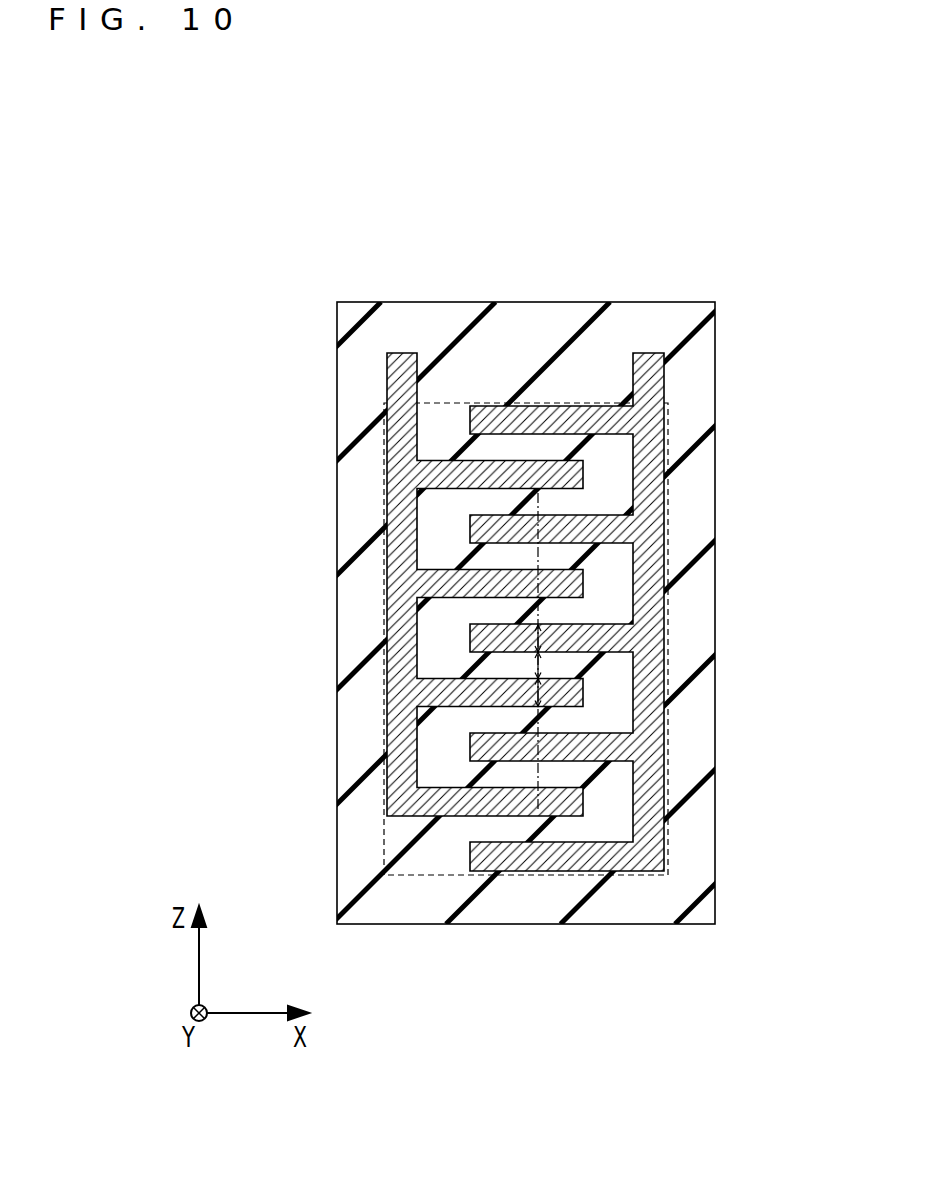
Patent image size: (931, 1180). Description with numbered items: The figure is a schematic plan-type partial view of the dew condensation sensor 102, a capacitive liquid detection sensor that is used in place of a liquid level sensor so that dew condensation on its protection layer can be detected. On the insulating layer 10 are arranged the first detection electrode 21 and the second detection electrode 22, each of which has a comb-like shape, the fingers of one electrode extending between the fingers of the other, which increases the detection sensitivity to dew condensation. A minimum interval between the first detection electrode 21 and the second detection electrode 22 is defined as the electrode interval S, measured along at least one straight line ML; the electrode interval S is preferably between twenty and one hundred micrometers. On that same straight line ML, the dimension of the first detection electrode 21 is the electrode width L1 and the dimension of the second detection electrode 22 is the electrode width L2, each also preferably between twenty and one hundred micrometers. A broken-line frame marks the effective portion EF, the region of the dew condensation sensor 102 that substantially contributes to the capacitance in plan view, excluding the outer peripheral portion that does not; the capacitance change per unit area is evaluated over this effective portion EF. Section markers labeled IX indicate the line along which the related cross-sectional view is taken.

The dew condensation sensor 102 is at (285, 239).
The insulating layer 10 is at (523, 328).
The first detection electrode 21 is at (400, 363).
The second detection electrode 22 is at (645, 358).
The effective portion EF is at (434, 875).
The straight line ML is at (538, 777).
The electrode width L1 is at (545, 695).
The electrode width L2 is at (545, 633).
The electrode interval S is at (541, 665).
The section line IX- IX is at (307, 387).